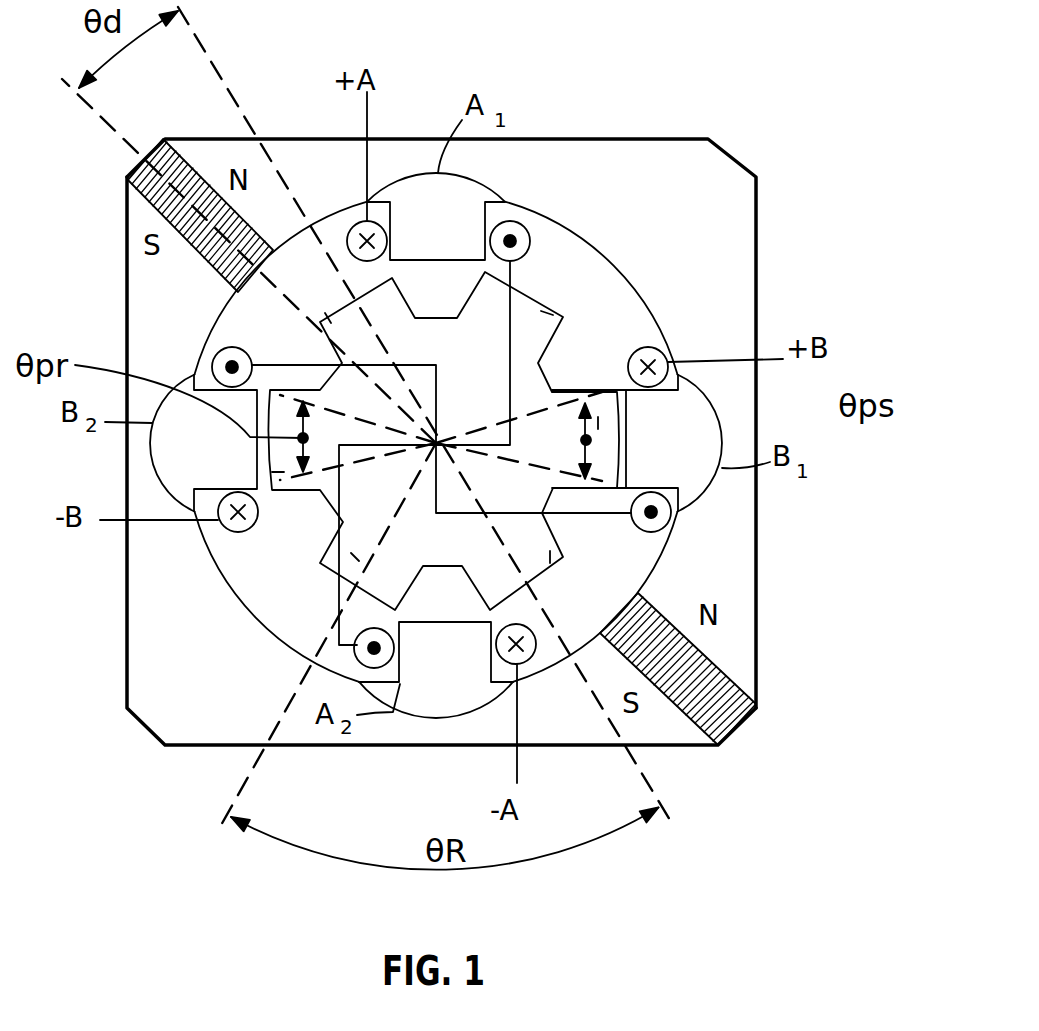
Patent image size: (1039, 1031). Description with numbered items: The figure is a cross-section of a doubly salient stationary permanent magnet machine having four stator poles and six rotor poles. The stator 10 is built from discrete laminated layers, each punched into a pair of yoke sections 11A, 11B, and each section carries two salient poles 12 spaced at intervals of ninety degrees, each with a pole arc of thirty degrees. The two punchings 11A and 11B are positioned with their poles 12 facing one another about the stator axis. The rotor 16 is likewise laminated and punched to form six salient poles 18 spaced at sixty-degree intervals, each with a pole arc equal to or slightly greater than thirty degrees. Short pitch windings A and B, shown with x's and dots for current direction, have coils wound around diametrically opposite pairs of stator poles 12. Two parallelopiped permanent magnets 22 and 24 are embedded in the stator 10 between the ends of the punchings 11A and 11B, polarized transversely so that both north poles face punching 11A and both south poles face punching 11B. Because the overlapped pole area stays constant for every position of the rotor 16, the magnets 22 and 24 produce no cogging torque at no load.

The stator 10 is at (653, 124).
The yoke section 11A is at (720, 190).
The yoke section 11B is at (215, 735).
The stator pole 12 is at (436, 244).
The rotor 16 is at (530, 372).
The rotor pole 18 is at (326, 320).
The permanent magnet 22 is at (130, 203).
The permanent magnet 24 is at (728, 690).